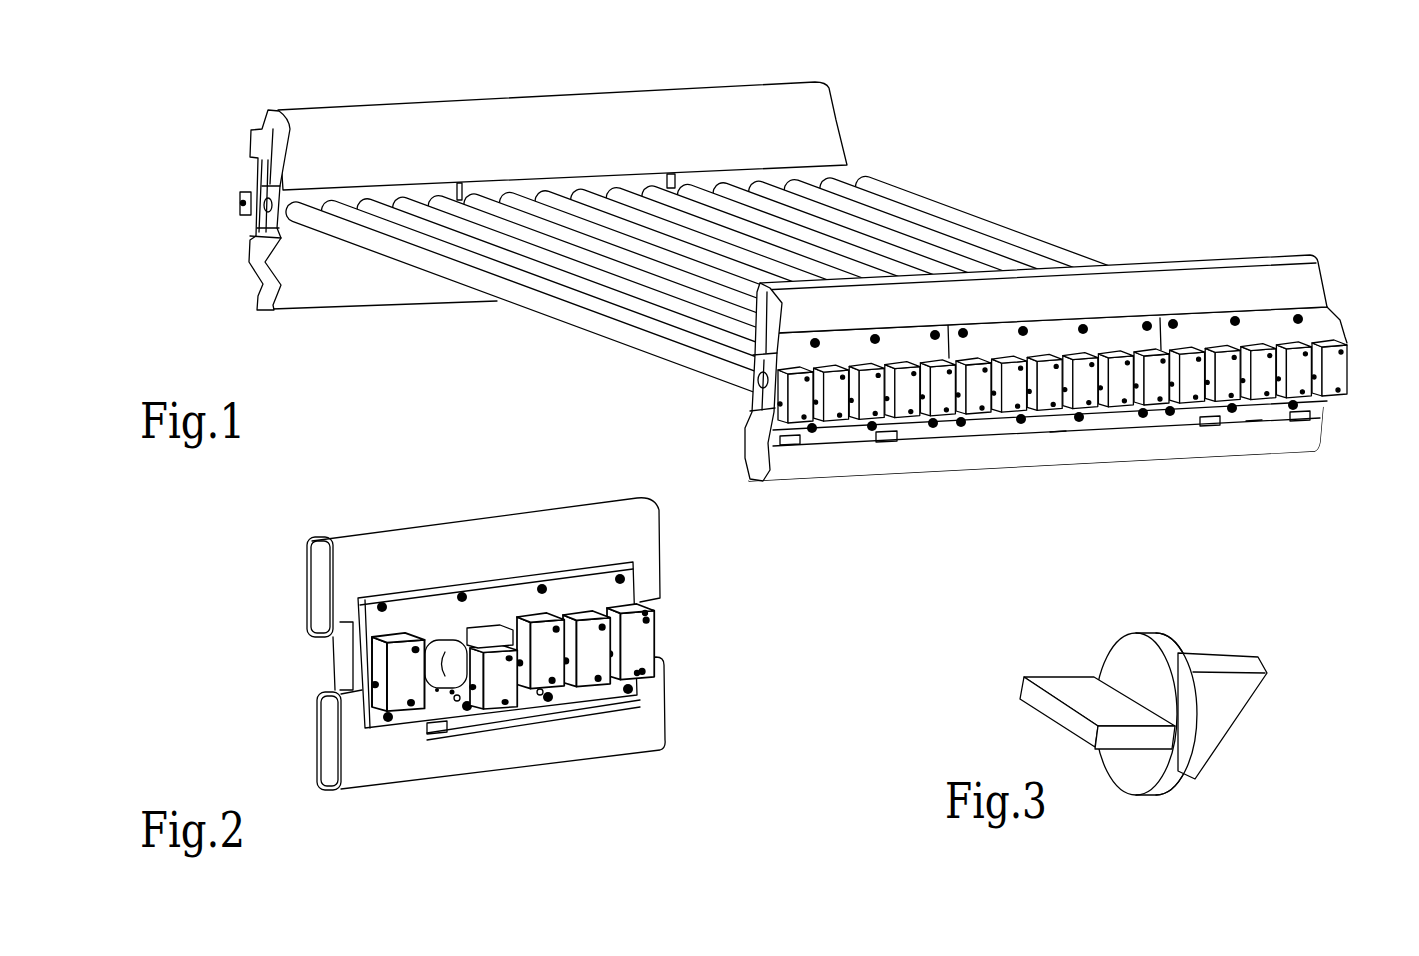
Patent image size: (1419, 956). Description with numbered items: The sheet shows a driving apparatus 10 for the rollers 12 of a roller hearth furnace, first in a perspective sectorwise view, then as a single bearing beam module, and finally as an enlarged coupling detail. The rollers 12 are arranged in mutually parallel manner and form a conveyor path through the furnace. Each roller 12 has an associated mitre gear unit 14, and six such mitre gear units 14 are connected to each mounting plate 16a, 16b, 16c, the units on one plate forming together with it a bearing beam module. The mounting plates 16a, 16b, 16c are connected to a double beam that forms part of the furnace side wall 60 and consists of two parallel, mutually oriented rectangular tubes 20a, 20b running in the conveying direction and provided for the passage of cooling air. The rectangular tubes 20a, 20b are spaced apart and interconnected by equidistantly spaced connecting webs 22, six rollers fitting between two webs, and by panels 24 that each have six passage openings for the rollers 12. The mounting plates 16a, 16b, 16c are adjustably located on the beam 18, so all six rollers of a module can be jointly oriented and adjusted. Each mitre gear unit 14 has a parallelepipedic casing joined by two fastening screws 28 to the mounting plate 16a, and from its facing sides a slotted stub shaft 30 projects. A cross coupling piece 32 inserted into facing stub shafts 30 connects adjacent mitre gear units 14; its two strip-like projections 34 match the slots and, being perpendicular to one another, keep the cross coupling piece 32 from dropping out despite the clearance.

In FIG. 1, the driving apparatus 10 is at (1080, 354).
In FIG. 1, the rollers 12 is at (922, 226).
In FIG. 2, the rollers 12 is at (440, 657).
In FIG. 1, the mitre gear unit 14 is at (1333, 373).
In FIG. 2, the mitre gear unit 14 is at (637, 645).
In FIG. 1, the mounting plate 16a is at (893, 432).
In FIG. 2, the mounting plate 16a is at (600, 598).
In FIG. 1, the mounting plate 16b is at (1058, 420).
In FIG. 1, the mounting plate 16c is at (1255, 412).
In FIG. 1, the beam 18 is at (1278, 255).
In FIG. 1, the rectangular tube 20a is at (367, 150).
In FIG. 2, the rectangular tube 20a is at (483, 594).
In FIG. 1, the rectangular tube 20b is at (307, 292).
In FIG. 2, the rectangular tube 20b is at (491, 723).
In FIG. 1, the connecting webs 22 is at (460, 183).
In FIG. 1, the panels 24 is at (571, 187).
In FIG. 2, the panels 24 is at (346, 656).
In FIG. 2, the fastening screws 28 is at (645, 614).
In FIG. 2, the stub shaft 30 is at (477, 697).
In FIG. 2, the cross coupling piece 32 is at (457, 700).
In FIG. 3, the cross coupling piece 32 is at (1178, 770).
In FIG. 3, the projections 34 is at (1053, 710).
In FIG. 1, the roller hearth furnace side wall 60 is at (843, 118).